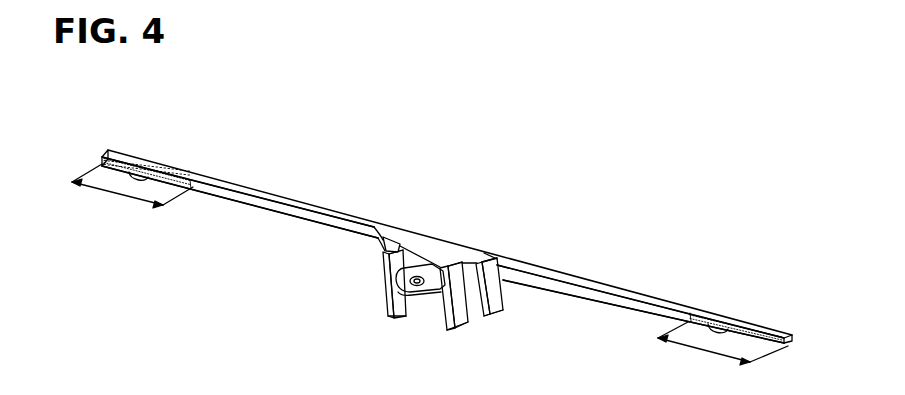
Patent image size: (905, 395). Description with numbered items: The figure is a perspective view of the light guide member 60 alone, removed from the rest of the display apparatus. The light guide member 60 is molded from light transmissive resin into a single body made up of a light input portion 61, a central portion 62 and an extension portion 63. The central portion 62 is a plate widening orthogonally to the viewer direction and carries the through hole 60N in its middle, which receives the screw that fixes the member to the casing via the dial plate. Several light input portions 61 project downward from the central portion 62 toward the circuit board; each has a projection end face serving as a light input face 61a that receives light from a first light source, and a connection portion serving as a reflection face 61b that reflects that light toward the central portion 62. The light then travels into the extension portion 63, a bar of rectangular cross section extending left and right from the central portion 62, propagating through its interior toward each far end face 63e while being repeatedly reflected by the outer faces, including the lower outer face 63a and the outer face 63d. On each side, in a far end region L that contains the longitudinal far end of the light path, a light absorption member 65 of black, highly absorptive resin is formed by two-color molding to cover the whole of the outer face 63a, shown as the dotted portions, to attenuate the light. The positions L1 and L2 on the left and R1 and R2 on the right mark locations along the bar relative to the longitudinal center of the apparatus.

The light guide member 60 is at (215, 214).
The through hole 60N is at (422, 289).
The light input portion 61 is at (380, 257).
The light input face 61a is at (402, 317).
The reflection face 61b is at (510, 223).
The central portion 62 is at (434, 251).
The extension portion 63 is at (257, 192).
The outer face 63a is at (280, 213).
The outer face 63d is at (305, 207).
The far end face 63e is at (102, 156).
The light absorption member 65 is at (143, 170).
The far end region L is at (104, 190).
The left side position L1 is at (161, 208).
The left side position L2 is at (98, 185).
The right side position R1 is at (689, 344).
The right side position R2 is at (752, 366).